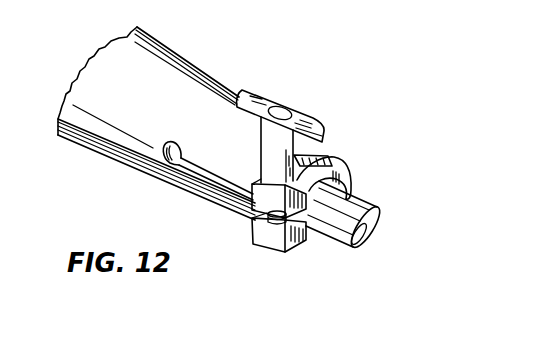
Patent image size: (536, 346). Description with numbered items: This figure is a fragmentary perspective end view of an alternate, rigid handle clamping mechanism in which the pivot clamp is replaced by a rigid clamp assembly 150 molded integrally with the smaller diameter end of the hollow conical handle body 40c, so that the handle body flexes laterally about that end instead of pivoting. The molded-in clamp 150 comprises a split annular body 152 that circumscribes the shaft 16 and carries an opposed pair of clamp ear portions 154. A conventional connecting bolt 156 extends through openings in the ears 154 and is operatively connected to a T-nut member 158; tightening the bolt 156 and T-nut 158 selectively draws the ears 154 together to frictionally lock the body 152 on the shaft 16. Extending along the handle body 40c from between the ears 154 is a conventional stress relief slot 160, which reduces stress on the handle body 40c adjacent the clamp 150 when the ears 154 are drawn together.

The hollow conical handle body 40c is at (187, 62).
The stress relief slot 160 is at (231, 146).
The T-nut member 158 is at (296, 118).
The rigid clamp assembly 150 is at (343, 146).
The split annular body 152 is at (341, 182).
The shaft 16 is at (377, 210).
The connecting bolt 156 is at (287, 226).
The clamp ear portions 154 is at (254, 237).